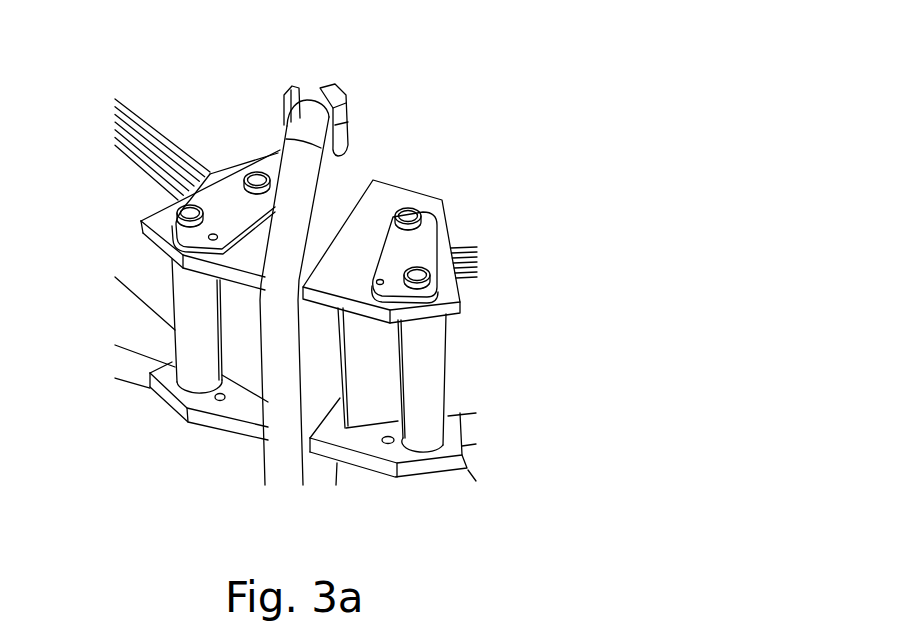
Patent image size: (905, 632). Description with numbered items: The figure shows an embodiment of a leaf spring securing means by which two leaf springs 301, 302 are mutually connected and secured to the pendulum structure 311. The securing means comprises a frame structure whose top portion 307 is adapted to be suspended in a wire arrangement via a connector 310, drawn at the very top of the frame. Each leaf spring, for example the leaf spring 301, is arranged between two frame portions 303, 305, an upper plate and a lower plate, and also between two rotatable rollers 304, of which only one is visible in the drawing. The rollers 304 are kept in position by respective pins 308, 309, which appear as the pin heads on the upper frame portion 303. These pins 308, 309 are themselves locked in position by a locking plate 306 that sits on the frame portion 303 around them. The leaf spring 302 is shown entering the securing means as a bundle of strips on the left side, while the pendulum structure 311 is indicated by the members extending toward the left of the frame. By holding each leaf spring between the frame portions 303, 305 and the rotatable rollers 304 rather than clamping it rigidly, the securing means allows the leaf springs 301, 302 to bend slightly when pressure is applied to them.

The leaf spring 301 is at (458, 342).
The leaf spring 302 is at (151, 140).
The frame portion 303 is at (387, 204).
The rotatable roller 304 is at (433, 427).
The frame portion 305 is at (367, 445).
The locking plate 306 is at (413, 248).
The top portion 307 is at (360, 158).
The pin 308 is at (410, 213).
The pin 309 is at (433, 269).
The connector 310 is at (336, 104).
The pendulum structure 311 is at (137, 447).